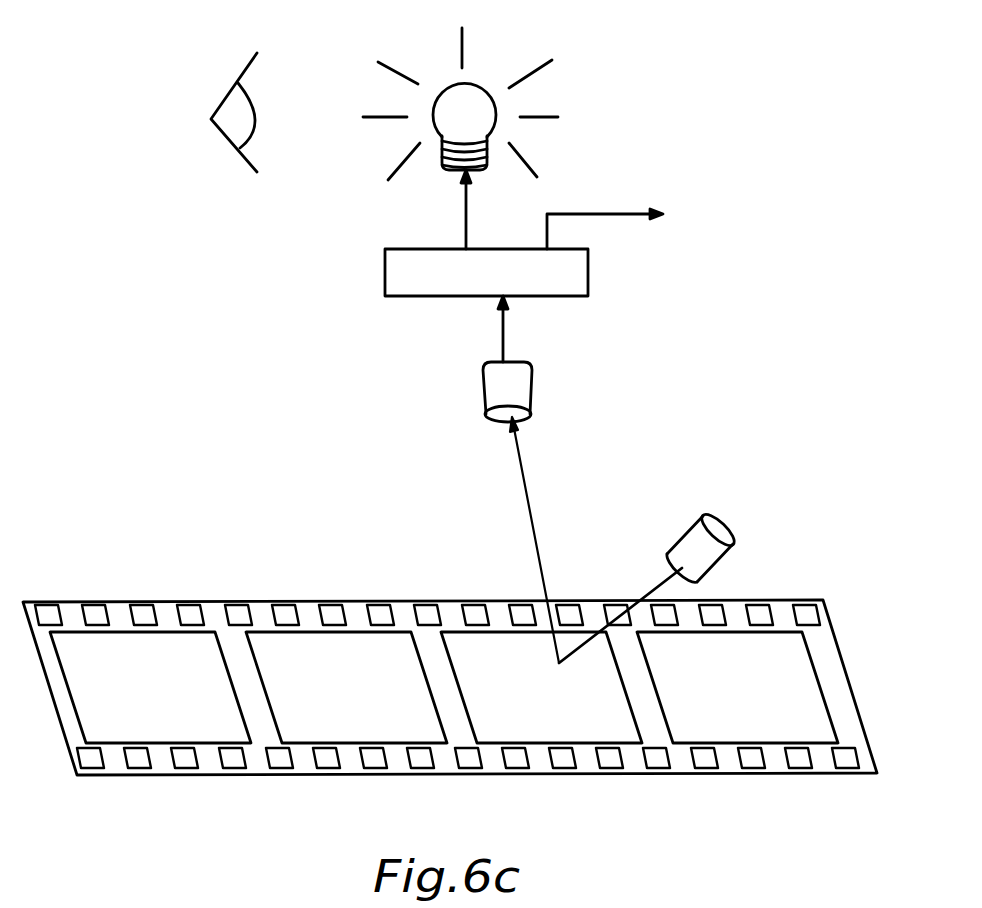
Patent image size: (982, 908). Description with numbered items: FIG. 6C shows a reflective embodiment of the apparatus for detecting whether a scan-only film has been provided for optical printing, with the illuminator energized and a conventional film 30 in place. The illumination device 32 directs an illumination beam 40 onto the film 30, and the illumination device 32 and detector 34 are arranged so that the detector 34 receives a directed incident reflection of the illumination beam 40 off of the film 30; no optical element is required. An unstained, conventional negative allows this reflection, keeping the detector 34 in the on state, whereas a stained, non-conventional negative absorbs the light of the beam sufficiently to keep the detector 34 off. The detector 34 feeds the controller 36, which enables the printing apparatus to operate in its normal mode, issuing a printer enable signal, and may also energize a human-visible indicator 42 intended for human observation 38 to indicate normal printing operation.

The film 30 is at (205, 758).
The illumination device 32 is at (738, 548).
The detector 34 is at (516, 395).
The controller 36 is at (392, 249).
The human observation 38 is at (222, 137).
The illumination beam 40 is at (527, 517).
The human-visible indicator 42 is at (443, 102).